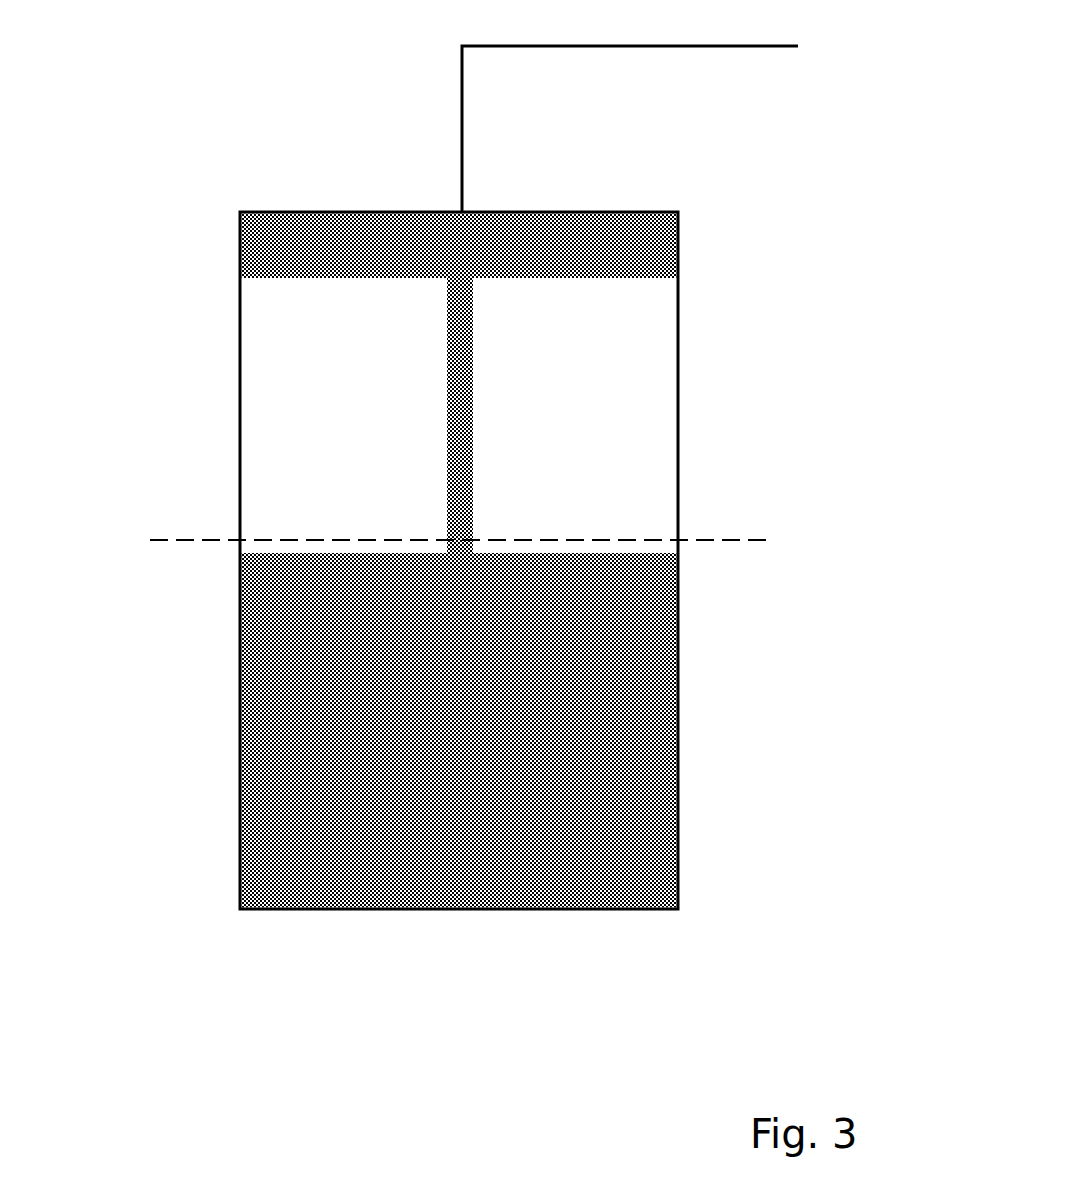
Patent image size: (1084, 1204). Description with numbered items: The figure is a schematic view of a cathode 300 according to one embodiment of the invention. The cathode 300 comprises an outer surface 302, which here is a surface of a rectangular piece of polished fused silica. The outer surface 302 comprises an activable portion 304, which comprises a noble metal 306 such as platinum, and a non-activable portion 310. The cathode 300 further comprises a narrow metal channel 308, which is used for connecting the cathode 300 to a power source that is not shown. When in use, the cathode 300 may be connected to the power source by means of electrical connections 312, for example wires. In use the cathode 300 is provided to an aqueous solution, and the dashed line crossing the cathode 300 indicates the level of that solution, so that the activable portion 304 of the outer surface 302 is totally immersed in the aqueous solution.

The cathode 300 is at (180, 215).
The outer surface 302 is at (678, 453).
The activable portion 304 is at (250, 708).
The noble metal 306 is at (459, 730).
The narrow metal channel 308 is at (270, 227).
The non-activable portion 310 is at (660, 363).
The electrical connections 312 is at (725, 46).